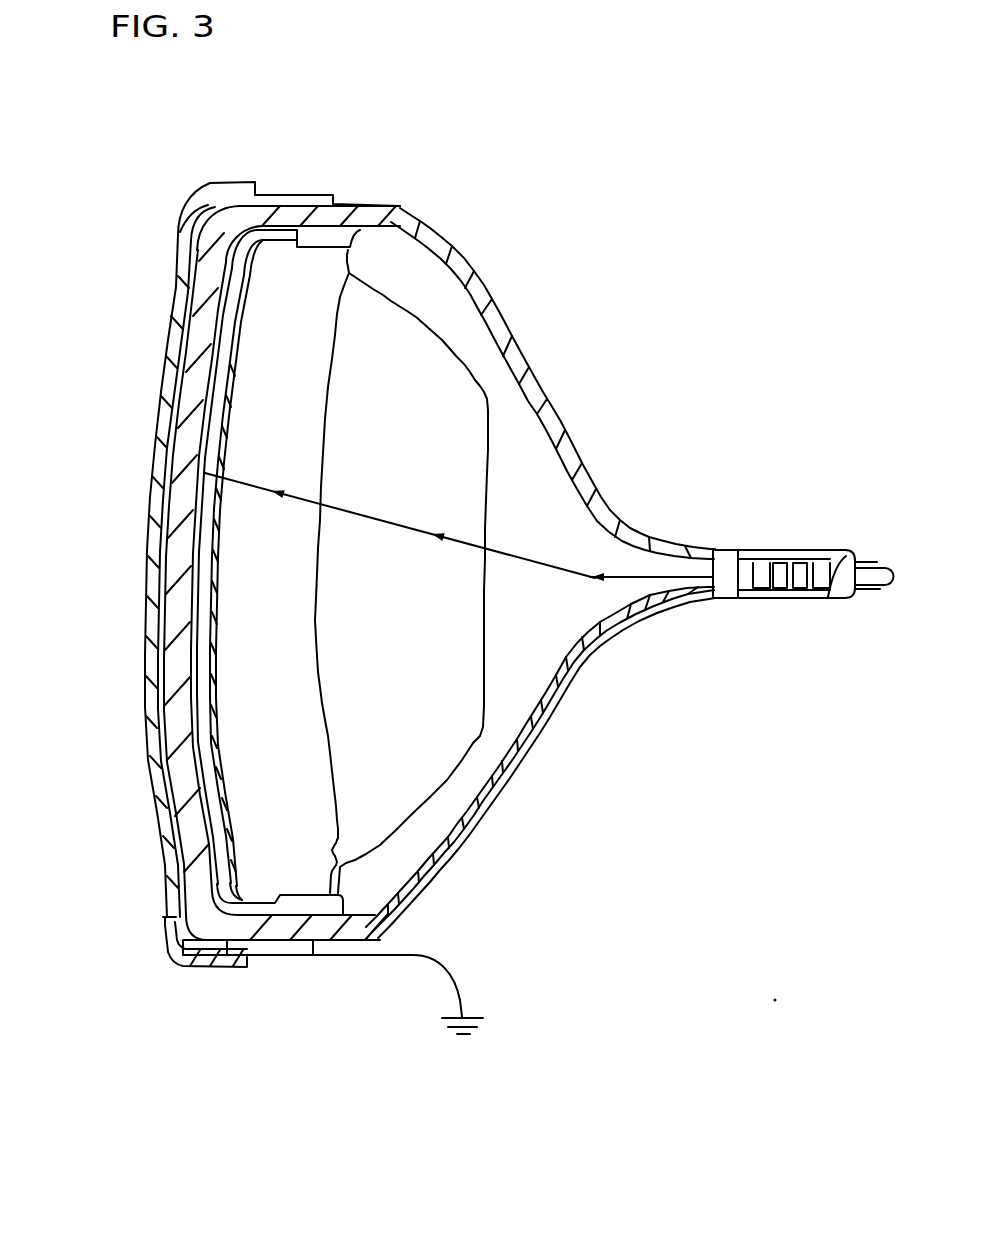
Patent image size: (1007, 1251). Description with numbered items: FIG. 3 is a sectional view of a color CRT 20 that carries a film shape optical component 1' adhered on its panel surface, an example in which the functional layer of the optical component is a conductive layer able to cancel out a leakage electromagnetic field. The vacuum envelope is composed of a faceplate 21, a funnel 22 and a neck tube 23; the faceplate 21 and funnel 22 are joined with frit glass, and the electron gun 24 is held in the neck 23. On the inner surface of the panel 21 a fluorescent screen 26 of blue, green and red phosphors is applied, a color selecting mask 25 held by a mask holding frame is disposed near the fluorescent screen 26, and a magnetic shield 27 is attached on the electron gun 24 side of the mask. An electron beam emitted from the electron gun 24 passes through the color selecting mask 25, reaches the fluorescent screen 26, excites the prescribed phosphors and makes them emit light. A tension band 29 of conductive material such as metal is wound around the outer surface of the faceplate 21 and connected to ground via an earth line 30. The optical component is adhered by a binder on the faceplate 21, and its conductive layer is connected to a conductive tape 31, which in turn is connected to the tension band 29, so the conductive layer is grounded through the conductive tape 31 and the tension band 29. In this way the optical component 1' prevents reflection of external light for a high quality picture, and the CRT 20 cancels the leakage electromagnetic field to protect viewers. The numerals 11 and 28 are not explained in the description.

The film shape optical component 1' is at (227, 549).
The adhesive layer 11 is at (150, 465).
The CRT 20 is at (680, 400).
The faceplate 21 is at (148, 583).
The funnel 22 is at (413, 213).
The neck tube 23 is at (843, 563).
The electron gun 24 is at (778, 555).
The color selecting mask 25 is at (233, 395).
The fluorescent screen 26 is at (148, 712).
The magnetic shield 27 is at (440, 380).
The electron beam 28 is at (522, 550).
The tension band 29 is at (272, 950).
The earth line 30 is at (448, 973).
The conductive tape 31 is at (197, 967).